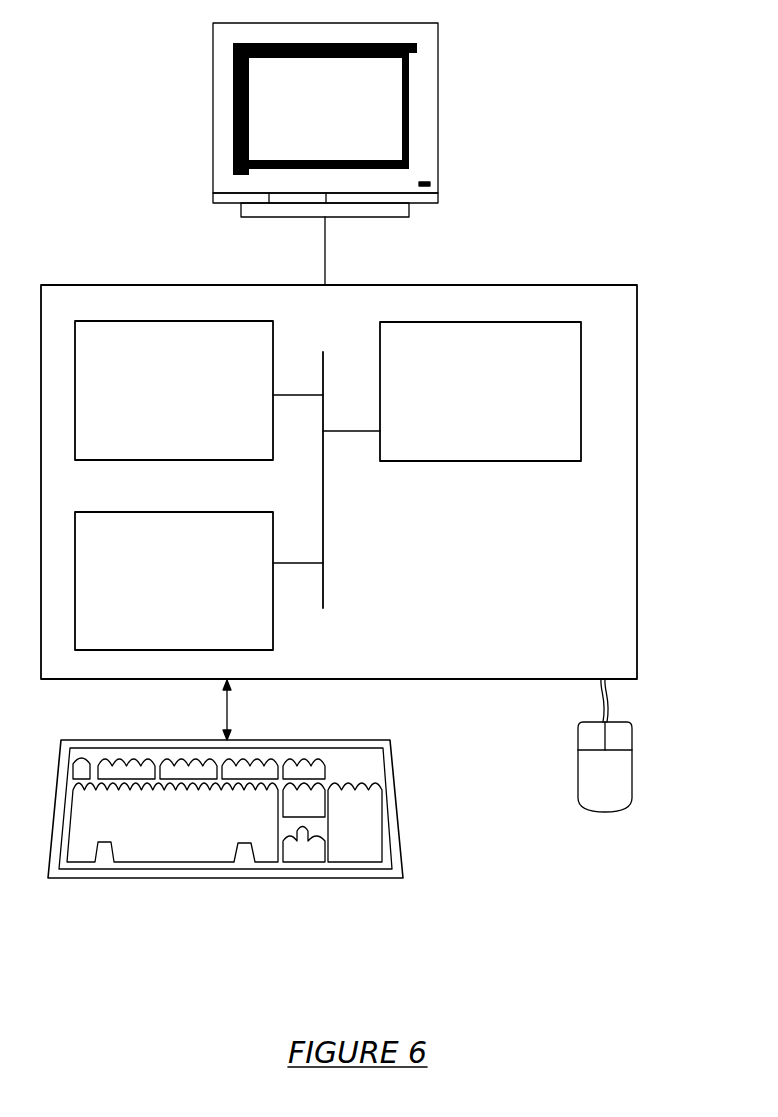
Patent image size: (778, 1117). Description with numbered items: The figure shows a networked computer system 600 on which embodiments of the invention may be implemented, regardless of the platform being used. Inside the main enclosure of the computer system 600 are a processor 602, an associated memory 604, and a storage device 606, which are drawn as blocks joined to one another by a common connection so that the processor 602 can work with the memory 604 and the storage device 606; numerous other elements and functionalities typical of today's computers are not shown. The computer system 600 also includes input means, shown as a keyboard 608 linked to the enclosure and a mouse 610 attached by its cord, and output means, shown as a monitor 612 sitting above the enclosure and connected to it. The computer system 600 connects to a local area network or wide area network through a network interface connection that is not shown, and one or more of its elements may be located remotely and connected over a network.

The networked computer system 600 is at (655, 159).
The processor 602 is at (459, 401).
The memory 604 is at (156, 402).
The storage device 606 is at (152, 592).
The keyboard 608 is at (150, 832).
The mouse 610 is at (586, 786).
The monitor 612 is at (306, 124).